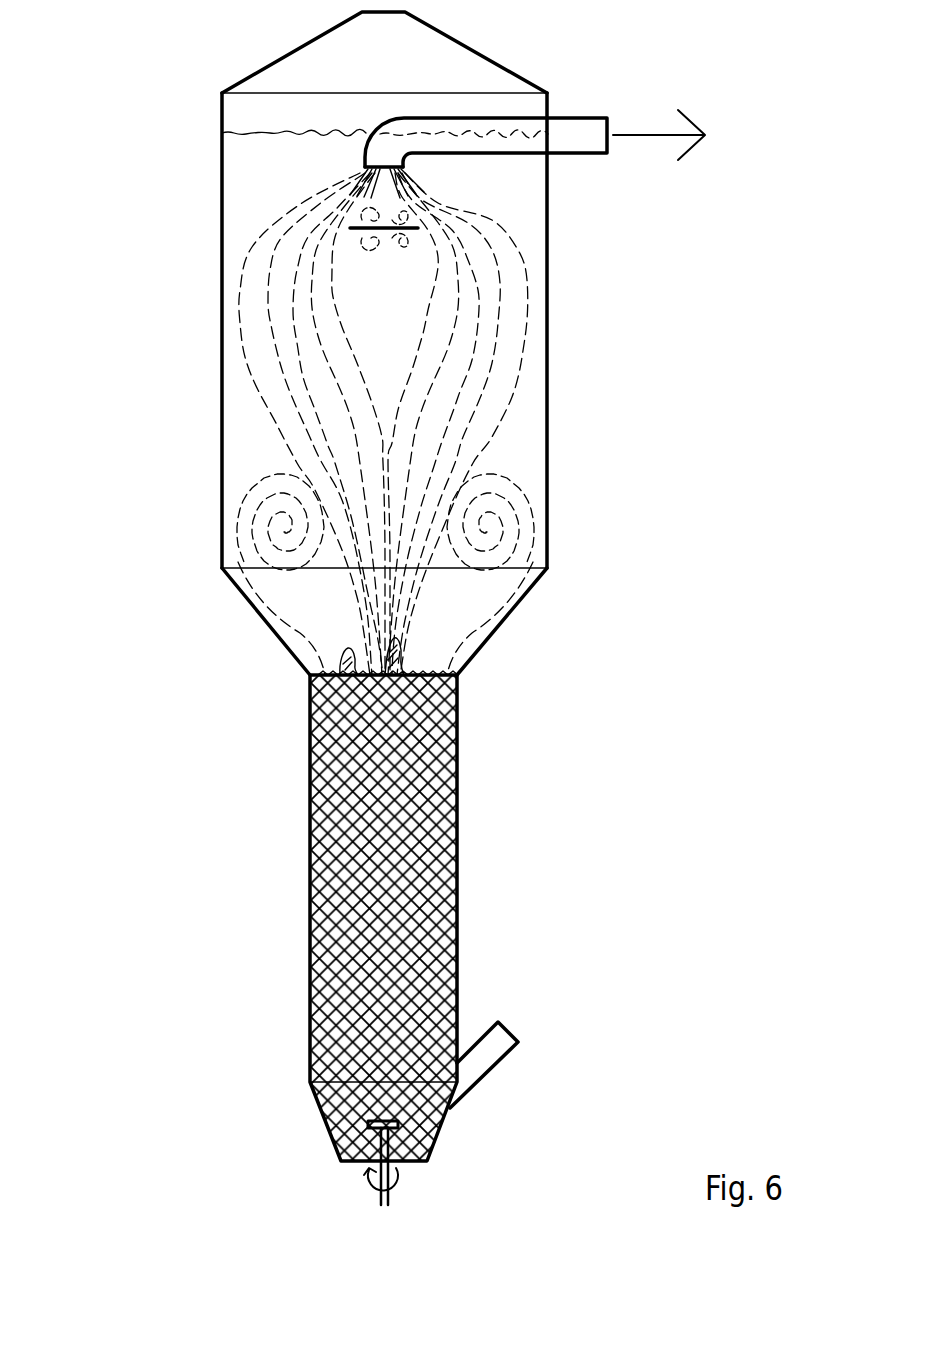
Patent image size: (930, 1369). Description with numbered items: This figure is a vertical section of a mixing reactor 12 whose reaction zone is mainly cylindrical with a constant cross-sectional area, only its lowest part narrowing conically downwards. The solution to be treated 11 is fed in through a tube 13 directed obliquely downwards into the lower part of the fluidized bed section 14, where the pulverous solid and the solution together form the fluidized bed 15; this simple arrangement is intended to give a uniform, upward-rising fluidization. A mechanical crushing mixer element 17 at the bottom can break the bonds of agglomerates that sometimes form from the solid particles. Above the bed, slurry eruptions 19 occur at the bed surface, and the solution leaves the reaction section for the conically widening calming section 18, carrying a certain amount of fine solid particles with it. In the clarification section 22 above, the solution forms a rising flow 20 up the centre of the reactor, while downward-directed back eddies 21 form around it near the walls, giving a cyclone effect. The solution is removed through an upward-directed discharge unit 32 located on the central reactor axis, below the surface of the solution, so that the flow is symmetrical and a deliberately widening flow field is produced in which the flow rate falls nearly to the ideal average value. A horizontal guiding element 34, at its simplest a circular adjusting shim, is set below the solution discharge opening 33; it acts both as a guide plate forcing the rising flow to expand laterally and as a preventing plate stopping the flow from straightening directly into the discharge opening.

The solution to be treated 11 is at (550, 1023).
The mixing reactor 12 is at (140, 519).
The tube 13 is at (490, 1062).
The fluidized bed section 14 is at (301, 971).
The fluidized bed 15 is at (405, 873).
The mechanical crushing mixer element 17 is at (435, 1130).
The calming section 18 is at (258, 629).
The slurry eruptions 19 is at (418, 641).
The rising flow 20 is at (450, 395).
The back eddies 21 is at (495, 510).
The clarification section 22 is at (213, 239).
The discharge unit 32 is at (567, 130).
The solution discharge opening 33 is at (417, 187).
The horizontal guiding element 34 is at (418, 230).